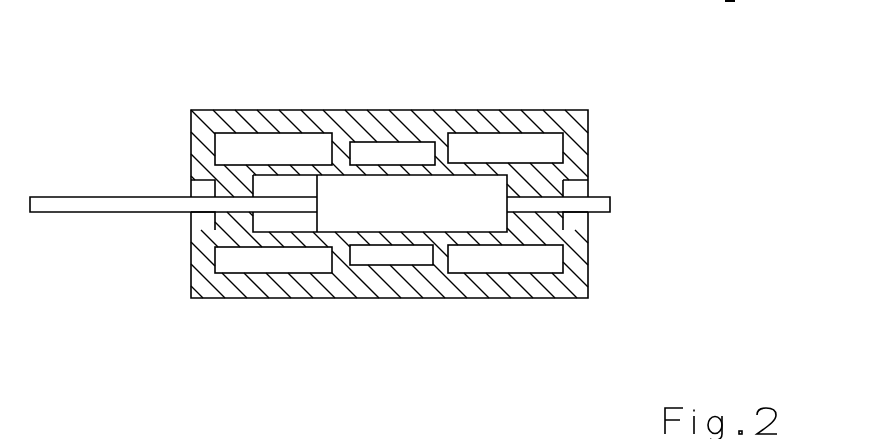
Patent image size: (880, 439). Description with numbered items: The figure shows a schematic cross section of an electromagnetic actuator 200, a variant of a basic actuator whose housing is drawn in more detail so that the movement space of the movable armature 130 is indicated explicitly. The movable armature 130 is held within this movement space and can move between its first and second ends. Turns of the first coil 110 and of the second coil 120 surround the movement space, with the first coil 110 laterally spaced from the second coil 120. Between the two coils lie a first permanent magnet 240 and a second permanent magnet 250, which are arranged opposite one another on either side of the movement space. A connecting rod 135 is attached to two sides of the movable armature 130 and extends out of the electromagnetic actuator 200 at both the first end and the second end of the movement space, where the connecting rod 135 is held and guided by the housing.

The electromagnetic actuator 200 is at (319, 196).
The first coil 110 is at (253, 205).
The movable armature 130 is at (375, 119).
The first permanent magnet 240 is at (375, 86).
The second coil 120 is at (465, 205).
The second permanent magnet 250 is at (351, 324).
The connecting rod 135 is at (320, 300).